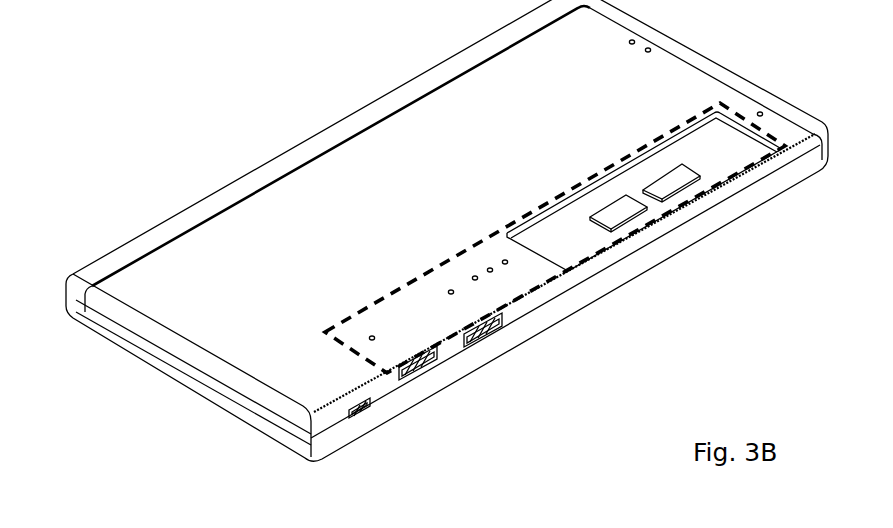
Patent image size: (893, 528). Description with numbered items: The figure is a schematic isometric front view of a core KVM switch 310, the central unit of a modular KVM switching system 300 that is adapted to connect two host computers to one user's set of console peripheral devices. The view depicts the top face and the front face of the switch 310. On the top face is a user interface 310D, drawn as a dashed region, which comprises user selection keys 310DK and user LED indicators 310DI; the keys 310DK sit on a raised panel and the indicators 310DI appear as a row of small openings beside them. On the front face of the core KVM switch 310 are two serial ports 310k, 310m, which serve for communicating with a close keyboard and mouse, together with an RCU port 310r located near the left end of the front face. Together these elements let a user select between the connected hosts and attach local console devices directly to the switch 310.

The modular KVM switching system 300 is at (166, 67).
The core KVM switch 310 is at (415, 197).
The user interface 310D is at (470, 246).
The user LED indicators 310DI is at (421, 300).
The user selection keys 310DK is at (643, 191).
The serial port 310k is at (423, 380).
The serial port 310m is at (482, 340).
The RCU port 310r is at (360, 413).